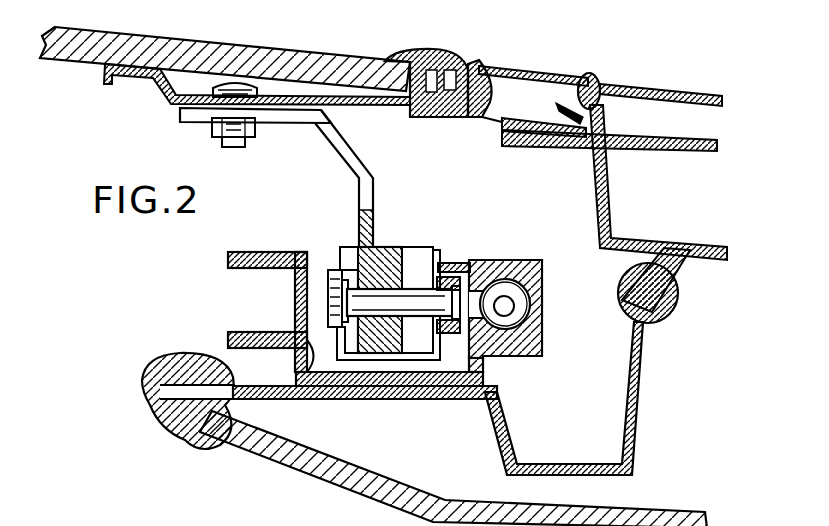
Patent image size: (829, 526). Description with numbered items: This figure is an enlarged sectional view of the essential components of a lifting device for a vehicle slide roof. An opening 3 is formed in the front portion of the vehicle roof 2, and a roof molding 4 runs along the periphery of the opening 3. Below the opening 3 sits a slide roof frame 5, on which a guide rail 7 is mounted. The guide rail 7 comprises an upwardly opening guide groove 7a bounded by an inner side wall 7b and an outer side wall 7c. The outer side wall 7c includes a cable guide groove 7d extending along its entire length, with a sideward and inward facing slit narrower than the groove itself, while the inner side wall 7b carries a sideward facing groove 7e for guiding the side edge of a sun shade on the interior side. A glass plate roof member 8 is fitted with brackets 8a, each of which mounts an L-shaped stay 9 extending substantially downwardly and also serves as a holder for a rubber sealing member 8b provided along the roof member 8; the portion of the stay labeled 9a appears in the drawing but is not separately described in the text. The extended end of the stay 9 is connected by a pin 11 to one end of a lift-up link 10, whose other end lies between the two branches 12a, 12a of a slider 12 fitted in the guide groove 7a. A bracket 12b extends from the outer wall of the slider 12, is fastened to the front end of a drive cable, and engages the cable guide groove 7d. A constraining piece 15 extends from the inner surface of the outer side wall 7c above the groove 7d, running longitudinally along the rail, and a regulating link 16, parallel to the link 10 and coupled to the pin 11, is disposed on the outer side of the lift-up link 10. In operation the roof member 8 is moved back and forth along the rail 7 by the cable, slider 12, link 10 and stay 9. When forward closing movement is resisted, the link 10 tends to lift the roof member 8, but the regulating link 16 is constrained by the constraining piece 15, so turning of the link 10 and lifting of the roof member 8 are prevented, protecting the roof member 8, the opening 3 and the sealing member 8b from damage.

The roof 2 is at (692, 91).
The opening 3 is at (469, 73).
The roof molding 4 is at (545, 76).
The slide roof frame 5 is at (633, 440).
The guide rail 7 is at (485, 370).
The guide groove 7a is at (418, 400).
The inner side wall 7b is at (310, 388).
The outer side wall 7c is at (543, 278).
The cable guide groove 7d is at (530, 310).
The groove 7e is at (295, 313).
The glass plate roof member 8 is at (145, 48).
The bracket 8a is at (330, 120).
The sealing member 8b is at (433, 56).
The L-shaped stay 9 is at (374, 180).
The arm block 9a is at (378, 235).
The lift-up link 10 is at (384, 362).
The pin 11 is at (357, 298).
The slider 12 is at (335, 258).
The branches 12a is at (349, 250).
The bracket 12b is at (503, 288).
The constraining piece 15 is at (452, 263).
The regulating link 16 is at (455, 336).